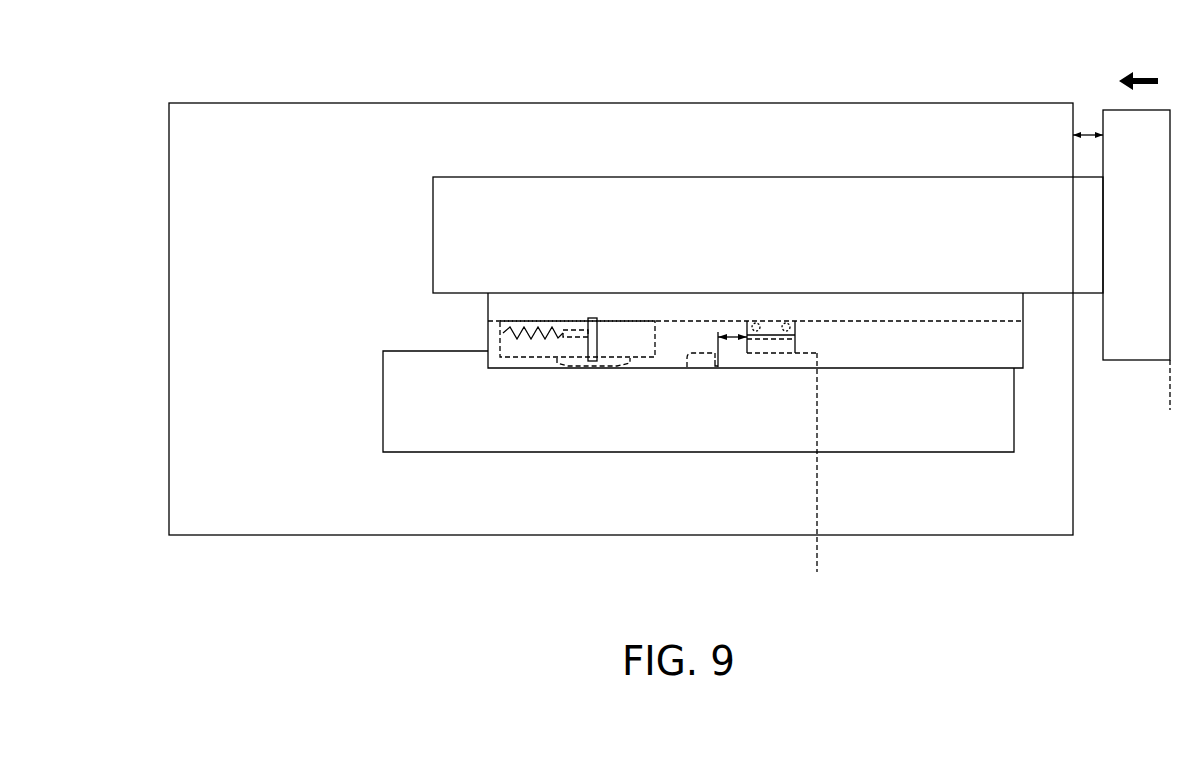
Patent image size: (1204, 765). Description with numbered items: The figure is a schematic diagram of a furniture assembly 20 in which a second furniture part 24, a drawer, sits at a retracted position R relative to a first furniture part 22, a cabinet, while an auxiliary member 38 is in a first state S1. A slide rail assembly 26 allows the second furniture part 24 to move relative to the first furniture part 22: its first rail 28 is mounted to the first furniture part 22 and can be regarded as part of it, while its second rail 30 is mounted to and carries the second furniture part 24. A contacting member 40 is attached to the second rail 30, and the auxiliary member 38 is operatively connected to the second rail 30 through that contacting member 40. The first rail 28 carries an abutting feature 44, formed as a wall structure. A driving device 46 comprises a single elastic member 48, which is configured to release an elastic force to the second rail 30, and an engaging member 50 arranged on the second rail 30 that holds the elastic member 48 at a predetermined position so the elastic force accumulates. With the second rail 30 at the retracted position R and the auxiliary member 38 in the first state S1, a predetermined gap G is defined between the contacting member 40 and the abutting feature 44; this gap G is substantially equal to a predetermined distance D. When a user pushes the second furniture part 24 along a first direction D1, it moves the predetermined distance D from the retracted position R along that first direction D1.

The furniture assembly 20 is at (188, 82).
The first furniture part 22 is at (378, 127).
The second furniture part 24 is at (1130, 342).
The slide rail assembly 26 is at (636, 463).
The first rail 28 is at (596, 435).
The second rail 30 is at (888, 302).
The auxiliary member 38 is at (790, 360).
The contacting member 40 is at (773, 327).
The abutting feature 44 is at (707, 358).
The driving device 46 is at (517, 368).
The elastic member 48 is at (538, 333).
The engaging member 50 is at (596, 340).
The predetermined gap G is at (736, 333).
The predetermined distance D is at (1088, 128).
The first direction D1 is at (1155, 82).
The retracted position R is at (1169, 395).
The first state S1 is at (817, 472).